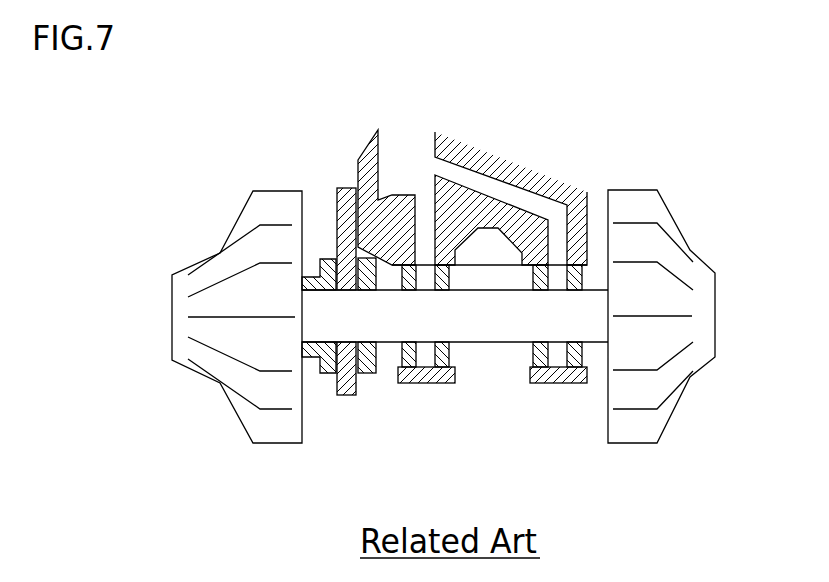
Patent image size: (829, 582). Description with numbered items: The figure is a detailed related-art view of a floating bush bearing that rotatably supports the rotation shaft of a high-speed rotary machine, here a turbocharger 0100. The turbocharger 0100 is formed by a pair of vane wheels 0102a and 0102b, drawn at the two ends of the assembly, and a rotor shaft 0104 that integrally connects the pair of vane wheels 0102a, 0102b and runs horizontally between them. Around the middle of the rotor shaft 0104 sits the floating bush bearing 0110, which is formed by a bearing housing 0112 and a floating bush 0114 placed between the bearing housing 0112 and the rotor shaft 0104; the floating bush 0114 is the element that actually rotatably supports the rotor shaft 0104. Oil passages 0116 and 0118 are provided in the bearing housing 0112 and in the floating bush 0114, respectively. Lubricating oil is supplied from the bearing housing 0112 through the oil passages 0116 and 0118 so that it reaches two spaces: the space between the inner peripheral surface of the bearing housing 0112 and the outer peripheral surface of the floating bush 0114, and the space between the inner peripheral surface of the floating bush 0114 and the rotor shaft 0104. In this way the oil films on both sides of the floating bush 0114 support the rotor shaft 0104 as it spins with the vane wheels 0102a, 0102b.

The turbocharger 0100 is at (682, 141).
The vane wheel 0102a is at (680, 232).
The vane wheel 0102b is at (245, 203).
The rotor shaft 0104 is at (388, 325).
The floating bush bearing 0110 is at (530, 90).
The bearing housing 0112 is at (537, 172).
The floating bush 0114 is at (533, 353).
The oil passage 0116 is at (379, 162).
The oil passage 0118 is at (423, 253).